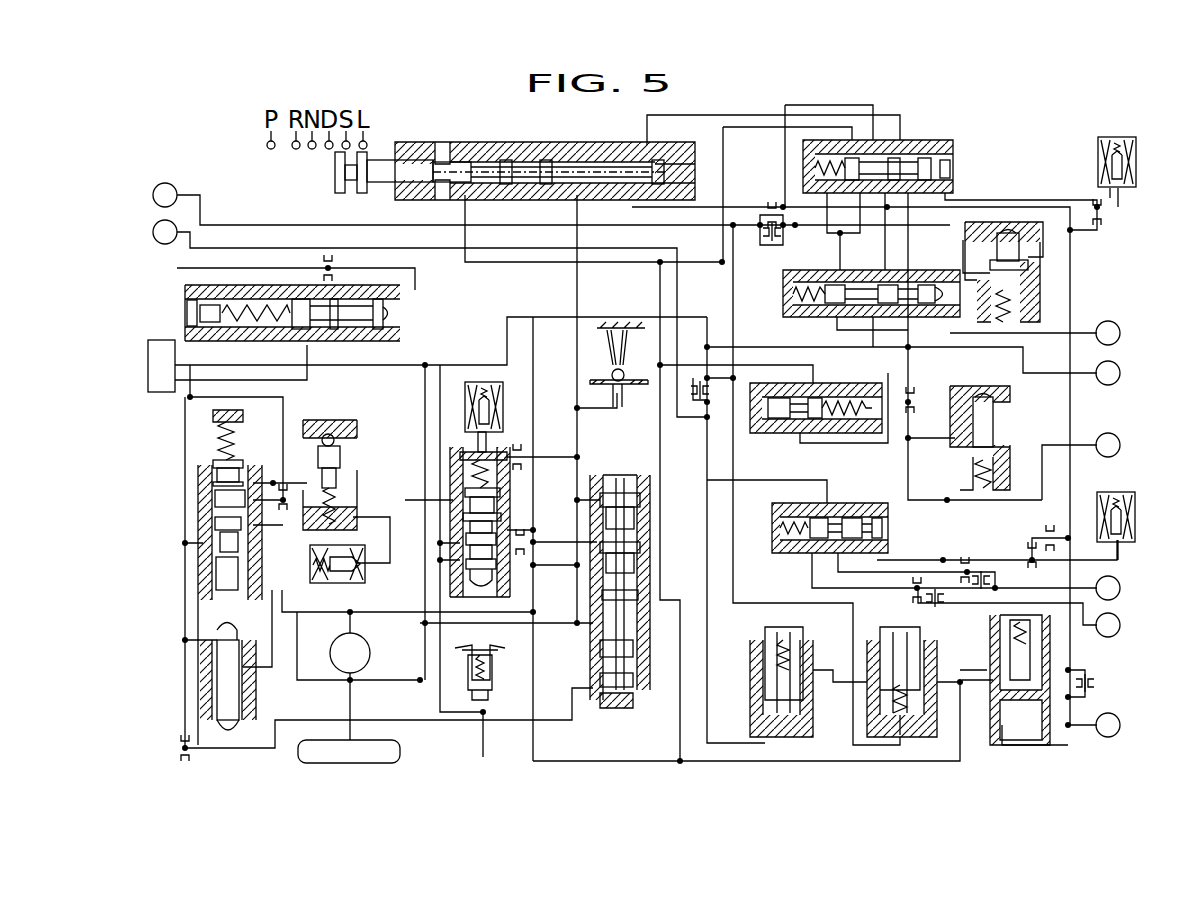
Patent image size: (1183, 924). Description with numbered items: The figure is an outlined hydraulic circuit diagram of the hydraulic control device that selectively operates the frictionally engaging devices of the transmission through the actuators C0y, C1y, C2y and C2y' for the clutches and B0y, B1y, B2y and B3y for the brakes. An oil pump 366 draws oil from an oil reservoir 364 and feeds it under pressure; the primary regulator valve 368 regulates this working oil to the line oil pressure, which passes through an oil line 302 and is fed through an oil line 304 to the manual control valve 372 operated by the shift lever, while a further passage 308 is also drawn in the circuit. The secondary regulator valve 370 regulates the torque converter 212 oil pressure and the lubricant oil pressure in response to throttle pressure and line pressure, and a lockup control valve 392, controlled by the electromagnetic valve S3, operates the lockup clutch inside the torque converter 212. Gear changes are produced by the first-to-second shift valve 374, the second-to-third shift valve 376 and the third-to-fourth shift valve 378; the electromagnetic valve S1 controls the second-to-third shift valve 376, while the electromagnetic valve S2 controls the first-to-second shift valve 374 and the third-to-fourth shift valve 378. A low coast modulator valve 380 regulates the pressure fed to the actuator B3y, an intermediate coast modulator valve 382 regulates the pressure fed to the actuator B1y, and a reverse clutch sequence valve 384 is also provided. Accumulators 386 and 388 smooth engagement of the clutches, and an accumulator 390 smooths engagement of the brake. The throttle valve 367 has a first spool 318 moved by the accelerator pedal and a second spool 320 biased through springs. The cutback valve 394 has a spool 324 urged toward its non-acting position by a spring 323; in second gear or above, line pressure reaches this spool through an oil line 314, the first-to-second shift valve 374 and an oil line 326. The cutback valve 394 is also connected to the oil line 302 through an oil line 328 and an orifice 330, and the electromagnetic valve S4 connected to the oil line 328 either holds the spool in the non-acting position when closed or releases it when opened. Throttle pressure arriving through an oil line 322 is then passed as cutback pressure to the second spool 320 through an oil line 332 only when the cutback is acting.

The manual control valve 372 is at (551, 158).
The 2-3 shift valve 376 is at (957, 166).
The 1-2 shift valve 374 is at (780, 297).
The oil line 314 is at (632, 207).
The secondary regulator valve 370 is at (180, 311).
The torque converter 212 is at (148, 362).
The oil line 302 is at (572, 335).
The oil line 326 is at (534, 317).
The oil line 304 is at (456, 364).
The lockup control valve 392 is at (515, 436).
The low coast modulator valve 380 is at (1036, 270).
The electromagnetic valve S1 is at (1138, 160).
The electromagnetic valve S2 is at (1138, 522).
The electromagnetic valve S3 is at (500, 405).
The electromagnetic valve S4 is at (336, 579).
The intermediate coast modulator valve 382 is at (1013, 448).
The reverse clutch sequence valve 384 is at (776, 432).
The 3-4 shift valve 378 is at (768, 538).
The pressure regulating valve 308 is at (445, 497).
The primary regulator valve 368 is at (620, 478).
The second spool 320 is at (213, 470).
The throttle valve 367 is at (252, 445).
The oil line 332 is at (273, 483).
The oil line 322 is at (283, 397).
The first spool 318 is at (247, 712).
The spool 324 is at (347, 452).
The cutback valve 394 is at (322, 445).
The spring 323 is at (350, 492).
The oil line 328 is at (344, 500).
The oil pump 366 is at (370, 652).
The orifice 330 is at (424, 623).
The oil reservoir 364 is at (402, 752).
The accumulator 390 is at (762, 642).
The accumulator 388 is at (927, 668).
The accumulator 386 is at (996, 655).
The actuator C2y is at (139, 193).
The actuator B2y is at (153, 231).
The actuator B3y is at (1120, 336).
The actuator C2y' is at (1134, 373).
The actuator B1y is at (1120, 448).
The actuator B0y is at (1120, 591).
The actuator C0y is at (1120, 628).
The actuator C1y is at (1120, 728).